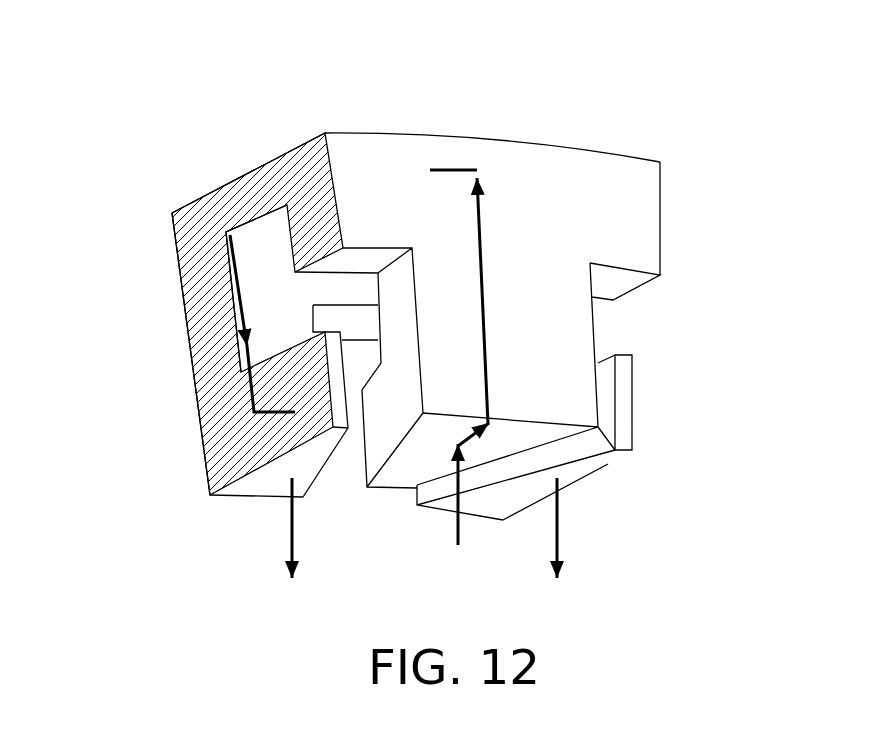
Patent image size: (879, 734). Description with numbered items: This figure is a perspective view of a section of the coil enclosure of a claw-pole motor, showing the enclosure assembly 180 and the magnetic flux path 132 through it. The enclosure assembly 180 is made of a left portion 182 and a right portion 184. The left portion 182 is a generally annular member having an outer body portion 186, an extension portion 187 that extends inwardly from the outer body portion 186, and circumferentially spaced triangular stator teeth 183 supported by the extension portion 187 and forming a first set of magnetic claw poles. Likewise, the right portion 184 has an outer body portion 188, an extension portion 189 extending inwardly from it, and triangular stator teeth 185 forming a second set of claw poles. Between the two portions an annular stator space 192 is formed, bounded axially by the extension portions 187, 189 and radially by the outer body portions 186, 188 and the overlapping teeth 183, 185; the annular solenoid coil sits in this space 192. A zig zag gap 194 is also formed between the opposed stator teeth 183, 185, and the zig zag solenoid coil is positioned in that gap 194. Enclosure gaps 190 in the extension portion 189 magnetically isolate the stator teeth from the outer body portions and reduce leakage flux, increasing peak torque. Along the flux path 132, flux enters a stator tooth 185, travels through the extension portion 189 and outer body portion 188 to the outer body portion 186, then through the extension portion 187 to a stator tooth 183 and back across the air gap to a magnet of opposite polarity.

The enclosure assembly 180 is at (383, 106).
The left portion 182 is at (194, 401).
The stator teeth 183 is at (249, 439).
The right portion 184 is at (664, 227).
The stator teeth 185 is at (409, 462).
The outer body portion 186 is at (182, 223).
The extension portion 187 is at (206, 322).
The outer body portion 188 is at (612, 192).
The extension portion 189 is at (549, 323).
The enclosure gaps 190 is at (340, 295).
The annular stator space 192 is at (258, 292).
The zig zag gap 194 is at (344, 472).
The magnetic flux path 132 is at (486, 229).